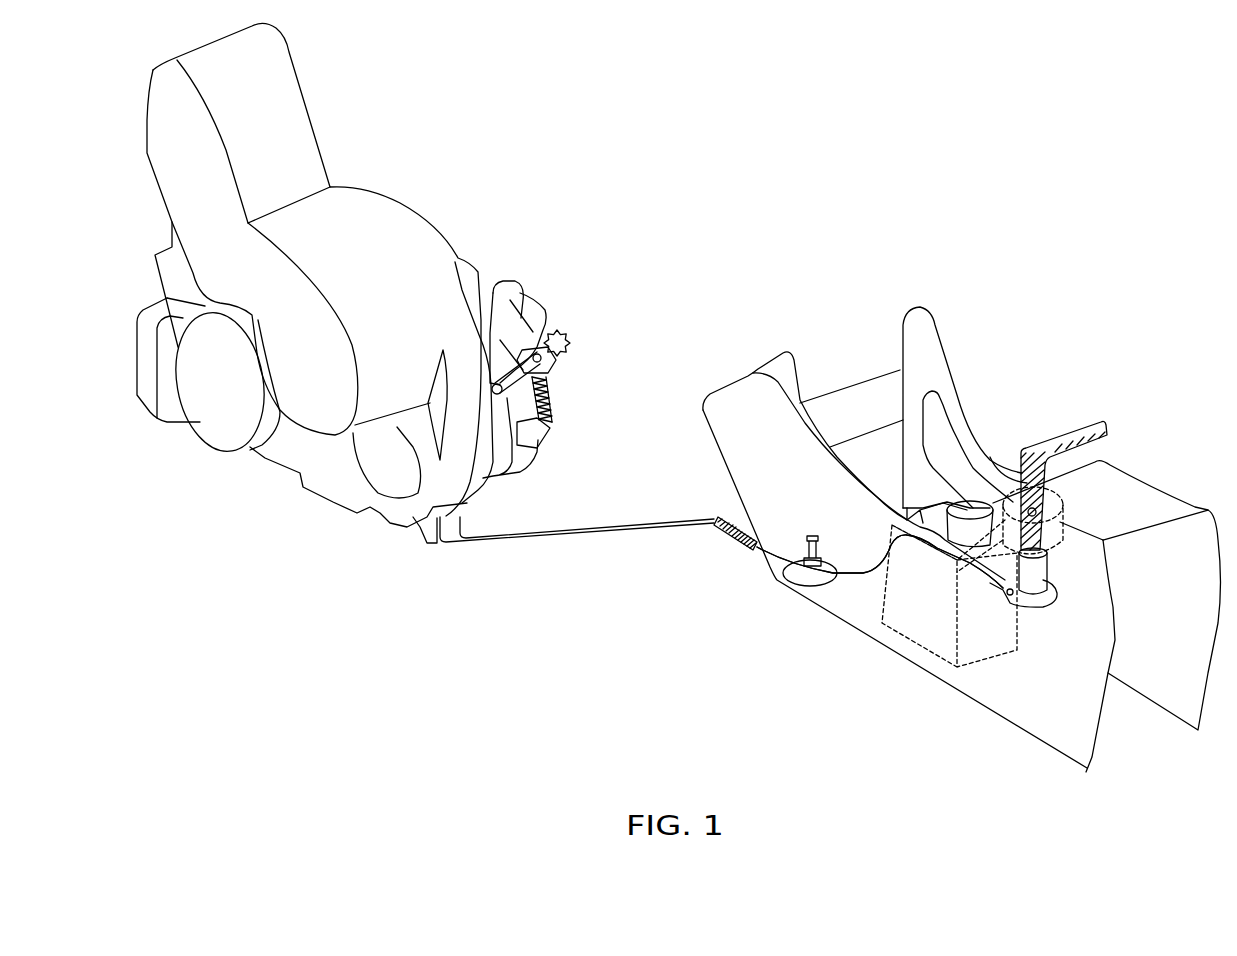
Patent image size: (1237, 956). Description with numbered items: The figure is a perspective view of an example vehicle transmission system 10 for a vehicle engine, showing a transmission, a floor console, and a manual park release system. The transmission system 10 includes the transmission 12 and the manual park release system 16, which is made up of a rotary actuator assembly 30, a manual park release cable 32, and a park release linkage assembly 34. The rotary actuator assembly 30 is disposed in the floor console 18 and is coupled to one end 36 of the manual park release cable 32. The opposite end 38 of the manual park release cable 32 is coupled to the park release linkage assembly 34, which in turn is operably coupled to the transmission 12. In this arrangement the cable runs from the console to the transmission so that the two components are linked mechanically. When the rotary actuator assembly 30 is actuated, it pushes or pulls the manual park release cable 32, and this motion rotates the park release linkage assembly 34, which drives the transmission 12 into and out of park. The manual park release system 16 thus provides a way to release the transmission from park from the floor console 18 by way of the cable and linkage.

The transmission system 10 is at (962, 78).
The transmission 12 is at (431, 170).
The manual park release system 16 is at (1144, 403).
The floor console 18 is at (739, 341).
The rotary actuator assembly 30 is at (1031, 630).
The manual park release cable 32 is at (627, 530).
The park release linkage assembly 34 is at (603, 345).
The one end of the manual park release cable 36 is at (968, 603).
The opposite end of the manual park release cable 38 is at (562, 449).